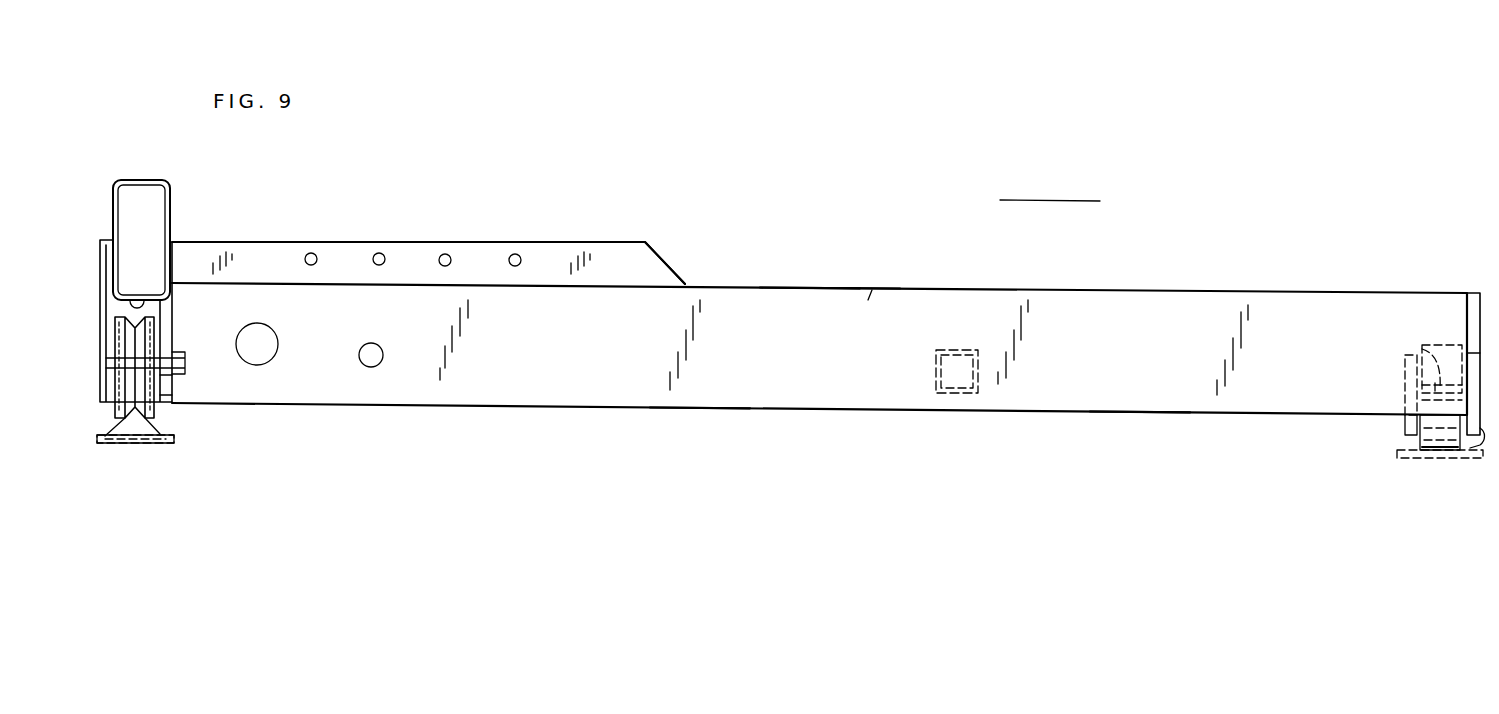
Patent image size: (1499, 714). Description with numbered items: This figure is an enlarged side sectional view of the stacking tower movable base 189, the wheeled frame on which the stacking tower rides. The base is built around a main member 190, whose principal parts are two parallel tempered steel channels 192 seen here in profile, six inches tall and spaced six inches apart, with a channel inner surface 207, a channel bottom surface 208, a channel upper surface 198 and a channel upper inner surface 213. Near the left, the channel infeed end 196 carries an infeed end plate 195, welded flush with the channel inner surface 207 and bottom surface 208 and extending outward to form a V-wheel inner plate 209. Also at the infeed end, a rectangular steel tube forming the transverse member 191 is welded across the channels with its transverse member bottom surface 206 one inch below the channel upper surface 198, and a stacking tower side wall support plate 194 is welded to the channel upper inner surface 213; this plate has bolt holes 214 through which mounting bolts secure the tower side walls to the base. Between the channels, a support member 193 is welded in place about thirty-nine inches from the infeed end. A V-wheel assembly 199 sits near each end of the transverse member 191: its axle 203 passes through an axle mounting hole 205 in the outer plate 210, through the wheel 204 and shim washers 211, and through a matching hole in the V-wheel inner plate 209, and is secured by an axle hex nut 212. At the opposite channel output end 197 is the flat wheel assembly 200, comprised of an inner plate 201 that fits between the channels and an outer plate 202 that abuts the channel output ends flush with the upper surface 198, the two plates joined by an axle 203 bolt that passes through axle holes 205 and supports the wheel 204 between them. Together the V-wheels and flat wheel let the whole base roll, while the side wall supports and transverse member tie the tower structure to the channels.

The stacking tower movable base 189 is at (1034, 253).
The main member 190 is at (1190, 290).
The transverse member 191 is at (172, 195).
The tempered steel channels 192 is at (1140, 413).
The support member 193 is at (970, 393).
The stacking tower side wall support plate 194 is at (668, 268).
The infeed end plate 195 is at (168, 330).
The channel infeed end 196 is at (172, 380).
The channel output end 197 is at (1468, 292).
The channel upper surface 198 is at (800, 288).
The V-wheel assembly 199 is at (150, 430).
The flat wheel assembly 200 is at (1430, 458).
The inner plate 201 is at (1405, 428).
The outer plate 202 is at (1477, 449).
The axle 203 is at (1422, 351).
The wheel 204 is at (1440, 345).
The axle mounting hole 205 is at (1405, 392).
The transverse member bottom surface 206 is at (140, 300).
The channel inner surface 207 is at (868, 290).
The channel bottom surface 208 is at (700, 409).
The V-wheel inner plate 209 is at (172, 395).
The outer plate 210 is at (118, 378).
The shim washers 211 is at (136, 420).
The axle hex nut 212 is at (183, 355).
The channel upper inner surface 213 is at (230, 288).
The bolt holes 214 is at (374, 254).